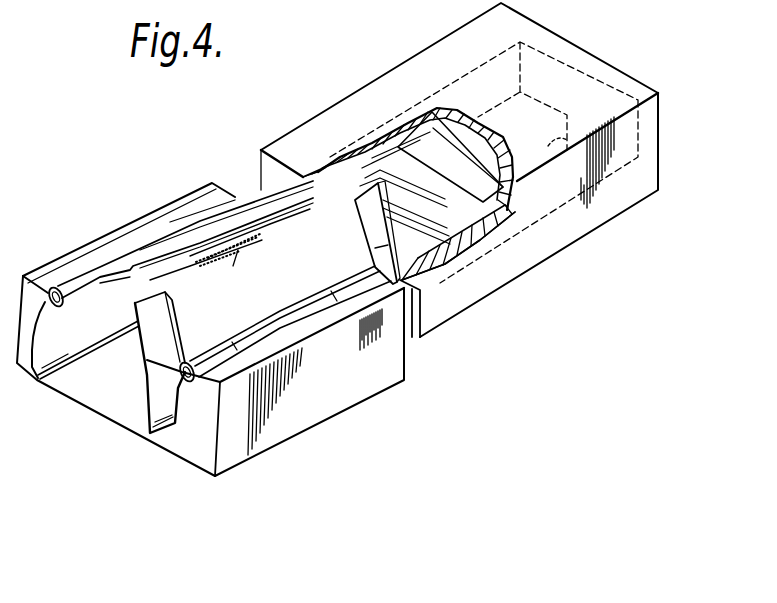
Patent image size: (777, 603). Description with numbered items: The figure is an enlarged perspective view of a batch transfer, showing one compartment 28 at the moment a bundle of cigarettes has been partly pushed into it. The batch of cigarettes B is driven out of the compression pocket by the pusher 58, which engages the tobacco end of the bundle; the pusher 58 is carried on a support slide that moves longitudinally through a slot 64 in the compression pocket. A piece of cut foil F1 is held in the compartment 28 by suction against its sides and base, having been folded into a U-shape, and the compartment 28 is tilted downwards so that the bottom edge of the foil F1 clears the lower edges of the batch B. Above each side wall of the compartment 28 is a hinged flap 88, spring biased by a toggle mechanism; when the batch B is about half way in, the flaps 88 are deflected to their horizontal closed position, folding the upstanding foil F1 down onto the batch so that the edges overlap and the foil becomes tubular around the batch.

The pusher 58 is at (437, 147).
The hinged flap 88 is at (147, 257).
The slot 64 is at (570, 148).
The batch of cigarettes B is at (445, 233).
The cut foil F1 is at (157, 400).
The compartment 28 is at (305, 413).